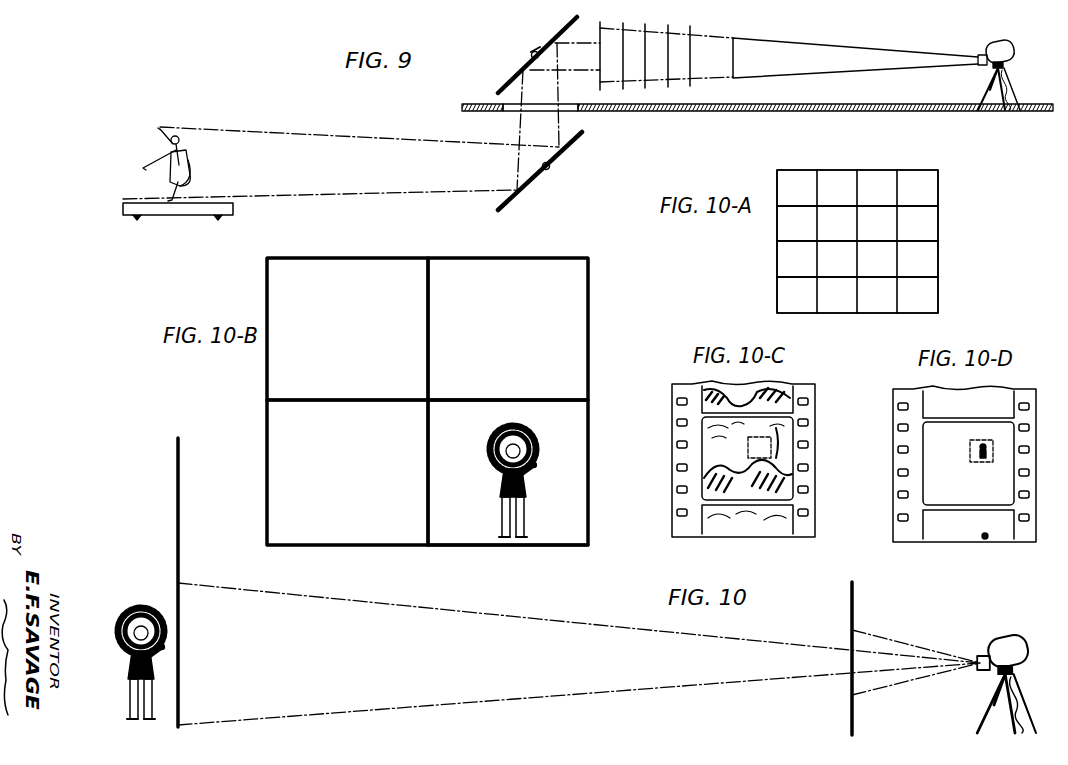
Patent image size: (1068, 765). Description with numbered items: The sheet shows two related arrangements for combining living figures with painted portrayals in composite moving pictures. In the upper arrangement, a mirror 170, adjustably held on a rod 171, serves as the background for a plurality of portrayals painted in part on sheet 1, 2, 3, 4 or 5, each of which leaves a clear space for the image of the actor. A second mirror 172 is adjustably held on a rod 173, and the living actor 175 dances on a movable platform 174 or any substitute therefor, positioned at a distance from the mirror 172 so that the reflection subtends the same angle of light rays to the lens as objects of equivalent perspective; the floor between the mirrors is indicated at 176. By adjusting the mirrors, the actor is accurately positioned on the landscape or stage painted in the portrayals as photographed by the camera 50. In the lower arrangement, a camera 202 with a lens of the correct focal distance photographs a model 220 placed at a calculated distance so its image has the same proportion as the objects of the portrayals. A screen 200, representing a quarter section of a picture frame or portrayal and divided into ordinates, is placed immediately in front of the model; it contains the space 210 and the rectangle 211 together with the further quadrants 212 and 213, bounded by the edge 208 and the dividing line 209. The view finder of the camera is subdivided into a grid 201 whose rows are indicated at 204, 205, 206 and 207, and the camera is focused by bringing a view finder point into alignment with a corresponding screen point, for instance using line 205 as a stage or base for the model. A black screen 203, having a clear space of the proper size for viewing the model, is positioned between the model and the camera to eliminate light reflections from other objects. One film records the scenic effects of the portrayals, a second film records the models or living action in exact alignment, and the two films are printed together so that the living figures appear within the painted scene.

In FIG. 9, the sheet 1 is at (690, 78).
In FIG. 9, the sheet 2 is at (668, 78).
In FIG. 9, the sheet 3 is at (645, 78).
In FIG. 9, the sheet 4 is at (623, 78).
In FIG. 9, the sheet 5 is at (600, 80).
In FIG. 9, the camera 50 is at (987, 75).
In FIG. 9, the mirror 170 is at (563, 27).
In FIG. 9, the rod 171 is at (531, 55).
In FIG. 9, the second mirror 172 is at (565, 150).
In FIG. 9, the rod 173 is at (547, 170).
In FIG. 9, the movable platform 174 is at (183, 206).
In FIG. 9, the living actor 175 is at (190, 152).
In FIG. 9, the floor opening 176 is at (577, 111).
In FIG. 10B, the screen 200 is at (589, 323).
In FIG. 10, the screen 200 is at (178, 522).
In FIG. 10A, the film frame grid 201 is at (776, 252).
In FIG. 10, the camera 202 is at (1005, 648).
In FIG. 10, the black screen 203 is at (854, 604).
In FIG. 10A, the first row of frames 204 is at (928, 313).
In FIG. 10A, the line 205 is at (928, 277).
In FIG. 10A, the third row of frames 206 is at (928, 241).
In FIG. 10A, the fourth row of frames 207 is at (928, 206).
In FIG. 10B, the screen bottom edge 208 is at (546, 543).
In FIG. 10B, the screen dividing line 209 is at (545, 401).
In FIG. 10B, the space 210 is at (347, 472).
In FIG. 10B, the rectangle 211 is at (508, 472).
In FIG. 10B, the screen quadrant 212 is at (347, 329).
In FIG. 10B, the screen quadrant 213 is at (508, 329).
In FIG. 10B, the model 220 is at (498, 488).
In FIG. 10, the model 220 is at (130, 676).